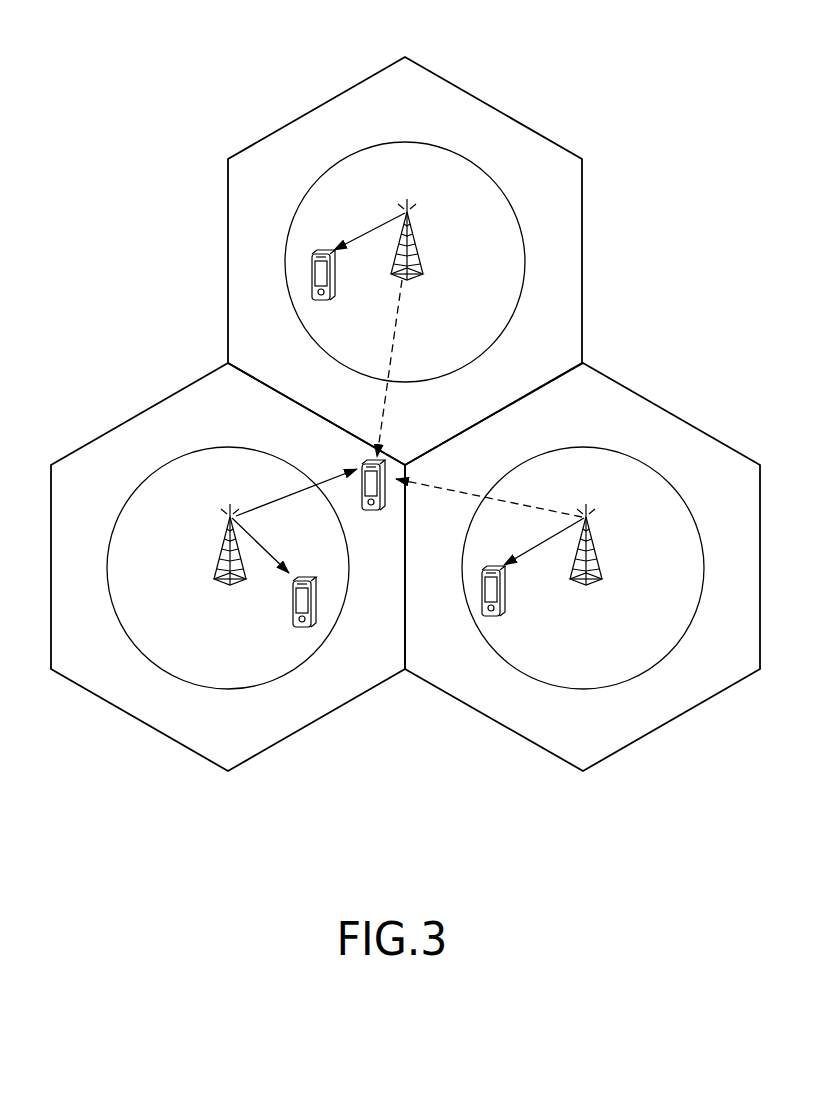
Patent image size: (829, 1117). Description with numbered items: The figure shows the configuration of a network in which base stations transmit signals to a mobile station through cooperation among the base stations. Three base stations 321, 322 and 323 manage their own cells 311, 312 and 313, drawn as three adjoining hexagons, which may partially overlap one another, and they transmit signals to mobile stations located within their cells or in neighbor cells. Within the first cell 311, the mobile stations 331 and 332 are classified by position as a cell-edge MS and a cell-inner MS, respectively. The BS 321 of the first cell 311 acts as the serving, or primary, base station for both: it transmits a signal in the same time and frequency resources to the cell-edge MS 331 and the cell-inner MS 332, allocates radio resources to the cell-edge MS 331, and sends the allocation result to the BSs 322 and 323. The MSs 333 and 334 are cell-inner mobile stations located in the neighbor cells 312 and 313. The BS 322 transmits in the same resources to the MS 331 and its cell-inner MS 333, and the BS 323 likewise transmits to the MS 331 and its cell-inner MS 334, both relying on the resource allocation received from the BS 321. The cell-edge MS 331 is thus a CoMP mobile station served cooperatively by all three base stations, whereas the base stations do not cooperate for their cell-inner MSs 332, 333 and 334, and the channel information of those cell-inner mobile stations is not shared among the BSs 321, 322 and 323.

The Cell #1 311 is at (228, 772).
The Cell #2 312 is at (583, 772).
The Cell #3 313 is at (404, 57).
The BS of Cell #1 321 is at (212, 555).
The BS of Cell #2 322 is at (601, 547).
The BS of Cell #3 323 is at (421, 245).
The cell-edge MS 331 is at (380, 509).
The cell-inner MS of Cell #1 332 is at (306, 576).
The cell-inner MS of Cell #2 333 is at (507, 597).
The cell-inner MS of Cell #3 334 is at (337, 289).